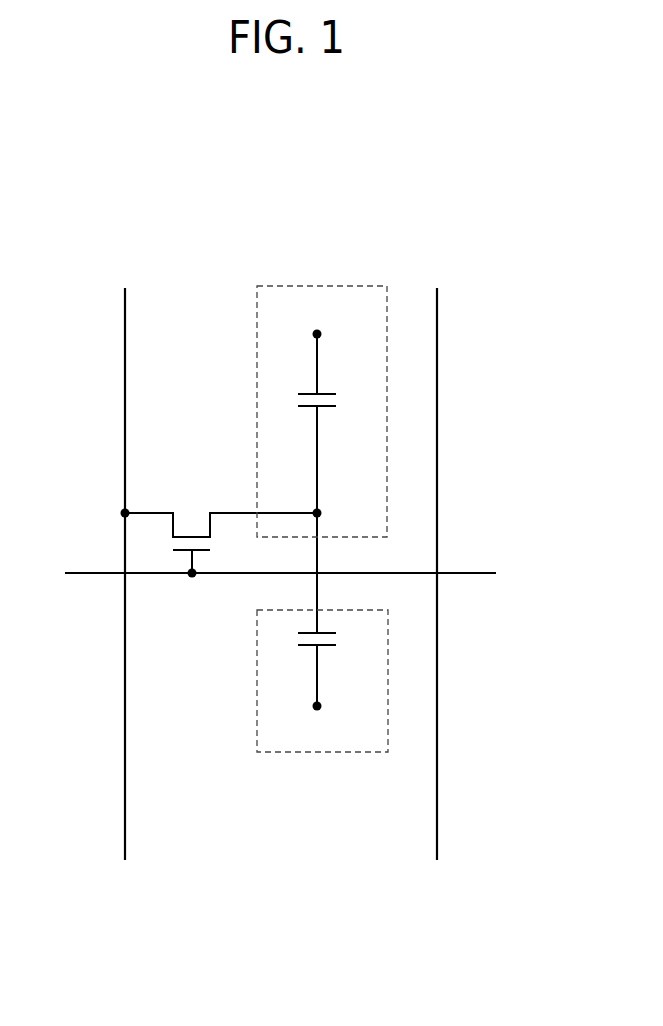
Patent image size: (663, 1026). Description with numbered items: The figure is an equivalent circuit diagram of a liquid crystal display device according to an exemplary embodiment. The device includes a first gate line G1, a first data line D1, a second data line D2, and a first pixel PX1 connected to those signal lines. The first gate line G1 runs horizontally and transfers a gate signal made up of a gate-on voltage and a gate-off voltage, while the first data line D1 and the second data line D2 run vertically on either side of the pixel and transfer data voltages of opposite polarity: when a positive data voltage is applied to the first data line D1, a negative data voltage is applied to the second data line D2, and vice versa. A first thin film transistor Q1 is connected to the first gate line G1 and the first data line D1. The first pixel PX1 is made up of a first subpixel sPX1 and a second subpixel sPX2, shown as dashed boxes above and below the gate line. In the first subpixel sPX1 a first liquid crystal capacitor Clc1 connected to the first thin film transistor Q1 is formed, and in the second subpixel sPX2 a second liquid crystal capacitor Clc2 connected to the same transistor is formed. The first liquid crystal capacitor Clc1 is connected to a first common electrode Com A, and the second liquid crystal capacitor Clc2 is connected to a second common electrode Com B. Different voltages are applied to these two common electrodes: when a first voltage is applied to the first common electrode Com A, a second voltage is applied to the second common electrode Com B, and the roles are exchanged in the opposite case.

The first data line D1 is at (125, 542).
The second data line D2 is at (436, 542).
The first gate line G1 is at (264, 575).
The first thin film transistor Q1 is at (221, 537).
The first liquid crystal capacitor Clc1 is at (337, 400).
The second liquid crystal capacitor Clc2 is at (338, 641).
The first common electrode Com A is at (315, 347).
The second common electrode Com B is at (315, 693).
The first subpixel sPX1 is at (388, 478).
The second subpixel sPX2 is at (388, 664).
The first pixel PX1 is at (543, 468).